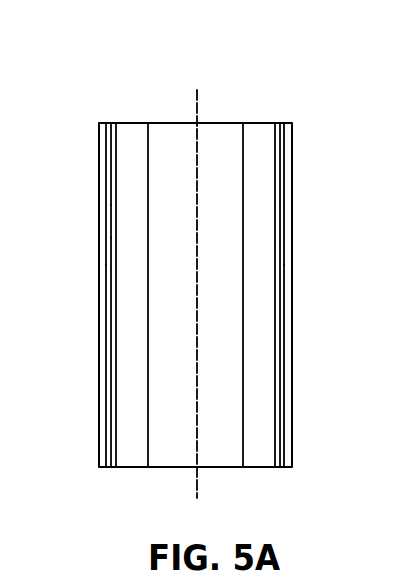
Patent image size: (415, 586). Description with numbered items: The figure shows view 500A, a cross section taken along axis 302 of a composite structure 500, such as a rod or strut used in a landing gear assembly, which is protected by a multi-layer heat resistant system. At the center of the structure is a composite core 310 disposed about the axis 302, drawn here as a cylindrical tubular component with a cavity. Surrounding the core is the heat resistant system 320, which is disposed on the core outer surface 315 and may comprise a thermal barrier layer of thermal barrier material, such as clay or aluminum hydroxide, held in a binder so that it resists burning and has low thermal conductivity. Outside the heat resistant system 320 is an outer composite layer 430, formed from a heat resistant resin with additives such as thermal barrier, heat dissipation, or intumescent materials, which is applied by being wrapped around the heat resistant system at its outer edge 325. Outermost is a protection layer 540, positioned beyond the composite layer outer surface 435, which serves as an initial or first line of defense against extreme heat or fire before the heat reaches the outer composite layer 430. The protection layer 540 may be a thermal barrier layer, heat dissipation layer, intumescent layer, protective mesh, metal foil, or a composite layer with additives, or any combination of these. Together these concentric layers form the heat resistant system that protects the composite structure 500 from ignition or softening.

The composite structure 500 is at (106, 76).
The view 500A is at (262, 76).
The axis 302 is at (195, 100).
The composite core 310 is at (138, 133).
The core outer surface 315 is at (106, 138).
The heat resistant system 320 is at (109, 166).
The heat resistant system outer edge 325 is at (108, 198).
The outer composite layer 430 is at (110, 227).
The composite layer outer surface 435 is at (110, 248).
The protection layer 540 is at (105, 288).